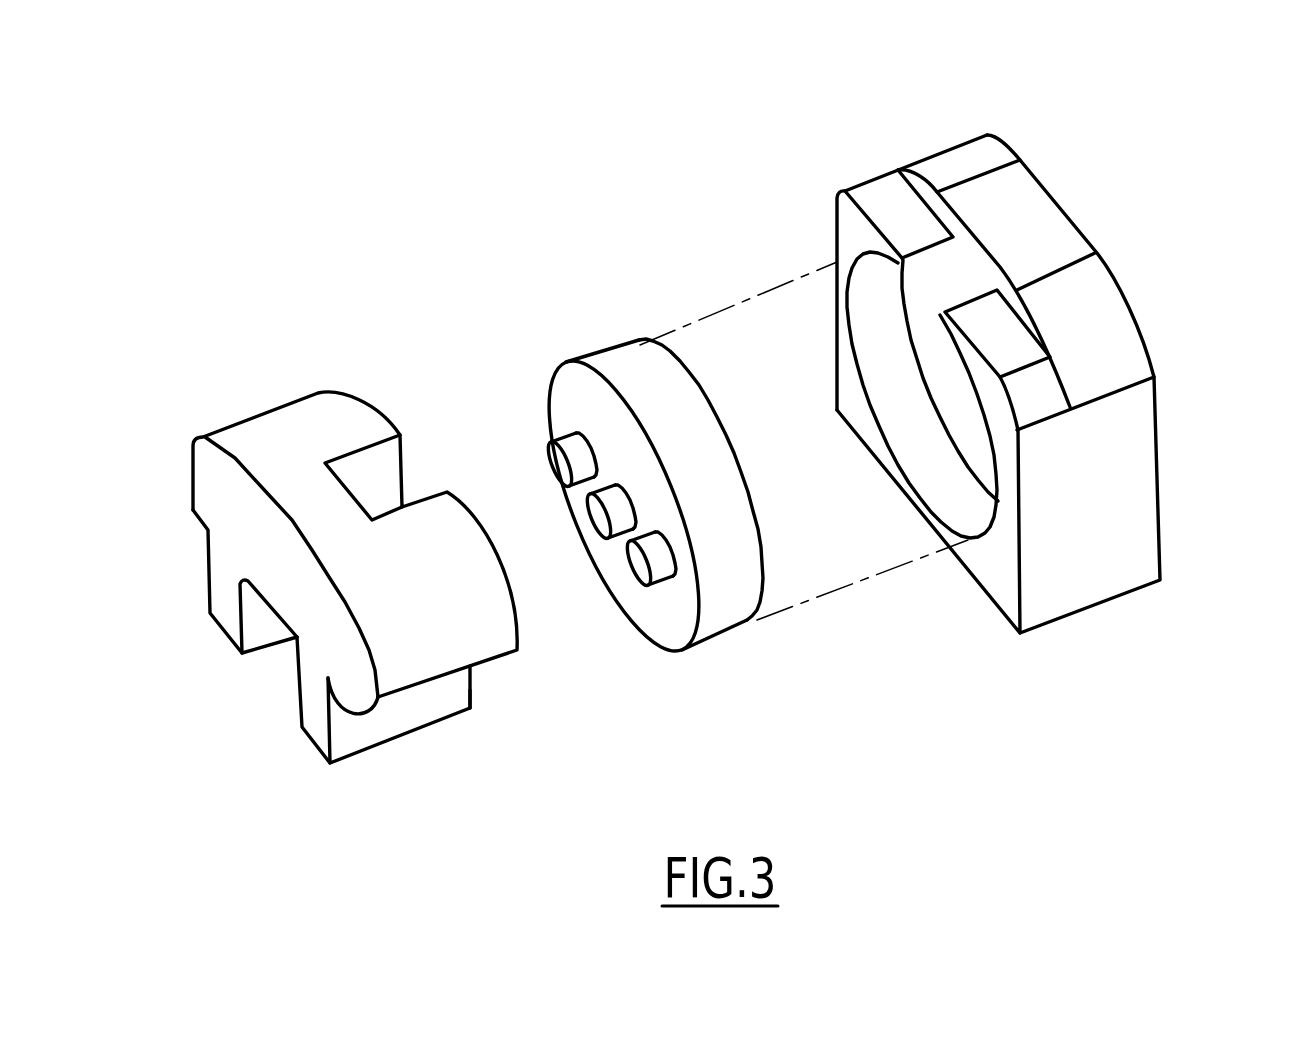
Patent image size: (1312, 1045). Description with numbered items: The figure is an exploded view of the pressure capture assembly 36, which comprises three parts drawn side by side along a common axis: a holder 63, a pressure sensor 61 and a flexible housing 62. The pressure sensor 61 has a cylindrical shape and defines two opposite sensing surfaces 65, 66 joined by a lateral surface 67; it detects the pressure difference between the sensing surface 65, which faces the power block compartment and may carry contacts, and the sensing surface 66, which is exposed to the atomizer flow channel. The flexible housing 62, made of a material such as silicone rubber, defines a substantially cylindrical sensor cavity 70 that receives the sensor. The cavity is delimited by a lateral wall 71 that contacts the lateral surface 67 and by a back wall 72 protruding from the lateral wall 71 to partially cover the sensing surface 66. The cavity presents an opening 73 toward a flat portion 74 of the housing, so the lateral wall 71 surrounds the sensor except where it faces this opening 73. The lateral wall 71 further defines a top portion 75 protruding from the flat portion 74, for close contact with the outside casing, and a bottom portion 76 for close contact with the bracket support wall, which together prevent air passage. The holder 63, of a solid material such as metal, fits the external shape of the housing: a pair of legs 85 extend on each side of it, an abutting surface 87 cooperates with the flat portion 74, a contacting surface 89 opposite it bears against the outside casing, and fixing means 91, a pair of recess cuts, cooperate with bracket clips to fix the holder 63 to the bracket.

The pressure capture assembly 36 is at (1048, 102).
The pressure sensor 61 is at (625, 687).
The flexible housing 62 is at (1186, 594).
The holder 63 is at (331, 790).
The sensing surface 65 is at (607, 608).
The sensing surface 66 is at (792, 634).
The lateral surface 67 is at (635, 382).
The sensor cavity 70 is at (912, 342).
The lateral wall 71 is at (931, 283).
The back wall 72 is at (1185, 403).
The opening 73 is at (975, 255).
The flat portion 74 is at (1010, 340).
The top portion 75 is at (1058, 235).
The bottom portion 76 is at (1057, 652).
The legs 85 is at (303, 754).
The abutting surface 87 is at (391, 768).
The contacting surface 89 is at (432, 428).
The fixing means 91 is at (432, 712).